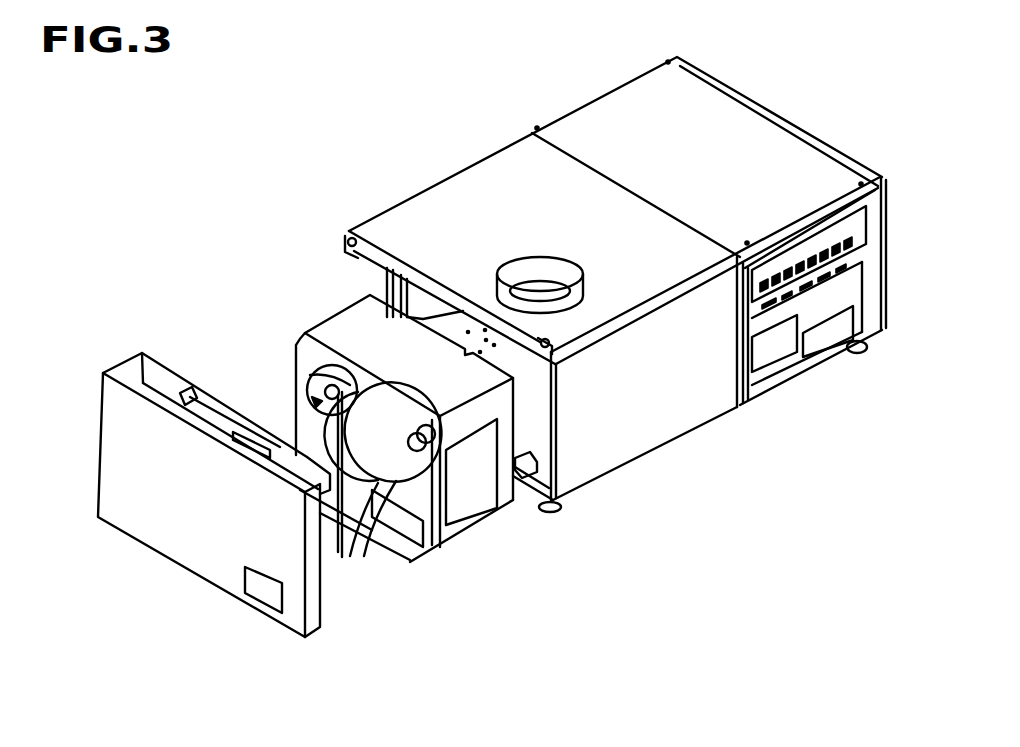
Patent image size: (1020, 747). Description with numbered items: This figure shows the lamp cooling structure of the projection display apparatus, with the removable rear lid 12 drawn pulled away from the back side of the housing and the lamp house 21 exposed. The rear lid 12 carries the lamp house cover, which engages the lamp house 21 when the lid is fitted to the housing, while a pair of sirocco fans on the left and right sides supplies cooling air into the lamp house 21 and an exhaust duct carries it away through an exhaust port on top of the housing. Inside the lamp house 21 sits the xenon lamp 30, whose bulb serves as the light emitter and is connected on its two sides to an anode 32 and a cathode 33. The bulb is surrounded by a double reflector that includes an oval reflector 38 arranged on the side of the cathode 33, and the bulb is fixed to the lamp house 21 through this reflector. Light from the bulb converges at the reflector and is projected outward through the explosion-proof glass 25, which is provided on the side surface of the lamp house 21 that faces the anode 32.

The rear lid 12 is at (158, 533).
The lamp house 21 is at (468, 521).
The explosion-proof glass 25 is at (310, 374).
The xenon lamp 30 is at (313, 399).
The anode 32 is at (305, 366).
The cathode 33 is at (378, 484).
The oval reflector 38 is at (353, 520).